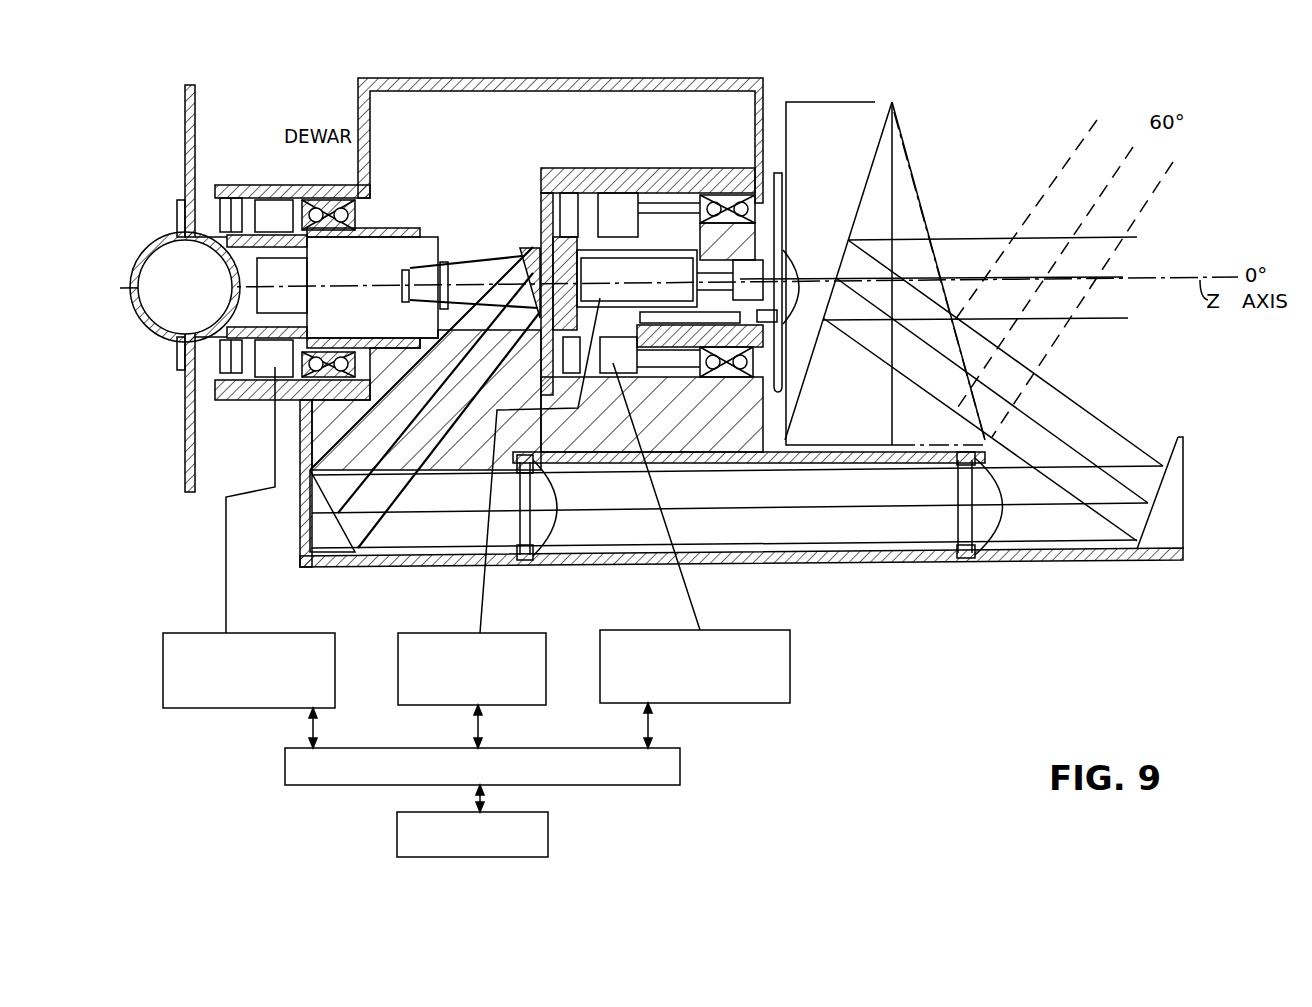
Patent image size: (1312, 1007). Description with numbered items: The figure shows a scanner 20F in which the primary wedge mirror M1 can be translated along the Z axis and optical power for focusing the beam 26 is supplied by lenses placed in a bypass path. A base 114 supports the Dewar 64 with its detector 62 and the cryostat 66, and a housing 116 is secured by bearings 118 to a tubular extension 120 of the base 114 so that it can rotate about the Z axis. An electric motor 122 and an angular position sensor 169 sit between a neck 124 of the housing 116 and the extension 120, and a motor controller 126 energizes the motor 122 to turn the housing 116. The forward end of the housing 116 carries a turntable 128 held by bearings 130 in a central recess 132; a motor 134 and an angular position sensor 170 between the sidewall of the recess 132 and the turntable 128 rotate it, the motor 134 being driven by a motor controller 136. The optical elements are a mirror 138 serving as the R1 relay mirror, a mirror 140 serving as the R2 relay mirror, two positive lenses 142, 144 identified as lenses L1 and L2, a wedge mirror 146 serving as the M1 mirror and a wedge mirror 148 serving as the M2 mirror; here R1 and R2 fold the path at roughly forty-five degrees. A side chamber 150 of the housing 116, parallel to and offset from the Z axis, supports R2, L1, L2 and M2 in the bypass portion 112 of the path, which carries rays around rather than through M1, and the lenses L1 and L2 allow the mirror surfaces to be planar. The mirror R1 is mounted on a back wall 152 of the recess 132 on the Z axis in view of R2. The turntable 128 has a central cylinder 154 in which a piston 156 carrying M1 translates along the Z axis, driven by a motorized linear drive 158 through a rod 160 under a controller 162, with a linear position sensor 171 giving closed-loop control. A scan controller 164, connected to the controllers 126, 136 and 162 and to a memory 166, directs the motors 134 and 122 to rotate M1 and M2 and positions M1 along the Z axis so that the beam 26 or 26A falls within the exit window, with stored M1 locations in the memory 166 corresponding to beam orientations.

The base 114 is at (185, 132).
The housing 116 is at (370, 80).
The scanner 20F is at (549, 64).
The neck 124 is at (237, 185).
The bearings 118 is at (343, 240).
The tubular extension 120 is at (413, 230).
The Dewar 64 is at (343, 245).
The detector 62 is at (402, 280).
The cryostat 66 is at (163, 305).
The angular position sensor 169 is at (222, 357).
The electric motor 122 is at (267, 373).
The mirror 140 is at (313, 500).
The side chamber 150 is at (400, 571).
The bypass portion 112 is at (1066, 560).
The R2 relay mirror R2 is at (310, 545).
The beam 26A is at (1130, 234).
The R1 relay mirror R1 is at (425, 383).
The mirror 138 is at (520, 256).
The back wall 152 is at (538, 455).
The lens 142 is at (558, 528).
The lens L1 is at (556, 508).
The lens 144 is at (960, 518).
The lens L2 is at (964, 506).
The wedge mirror 148 is at (1183, 470).
The M2 mirror M2 is at (1176, 526).
The central recess 132 is at (587, 168).
The motorized linear drive 158 is at (543, 340).
The angular position sensor 170 is at (563, 207).
The motor 134 is at (618, 200).
The rod 160 is at (673, 210).
The bearings 130 is at (722, 193).
The linear position sensor 171 is at (712, 320).
The central cylinder 154 is at (778, 290).
The piston 156 is at (782, 255).
The turntable 128 is at (772, 230).
The wedge mirror 146 is at (887, 110).
The M1 mirror M1 is at (914, 150).
The beam 26 is at (1068, 158).
The motor controller 126 is at (228, 708).
The controller 162 is at (540, 705).
The motor controller 136 is at (790, 670).
The scan controller 164 is at (680, 764).
The memory 166 is at (548, 830).